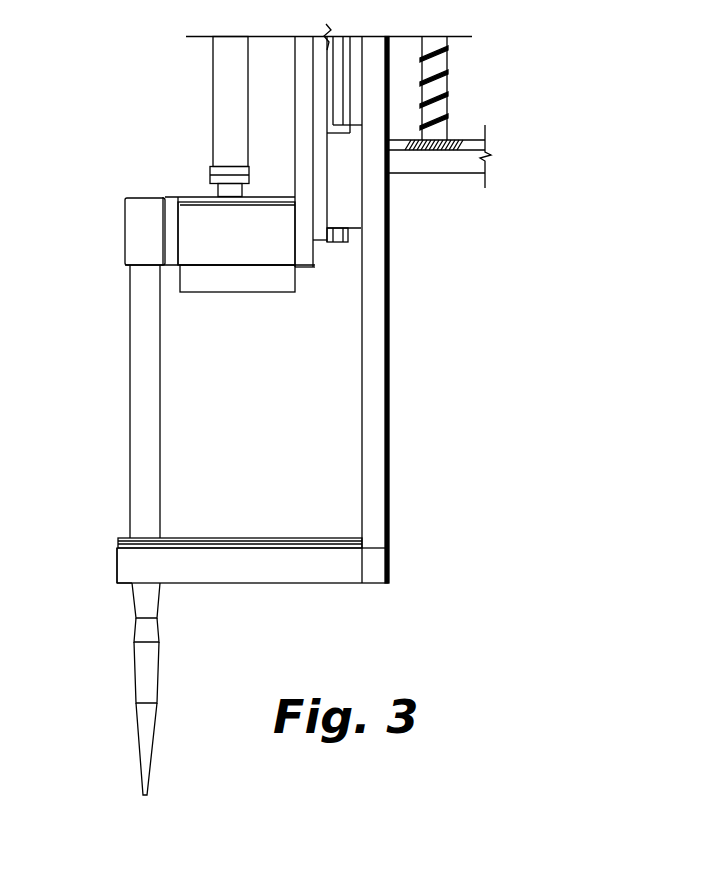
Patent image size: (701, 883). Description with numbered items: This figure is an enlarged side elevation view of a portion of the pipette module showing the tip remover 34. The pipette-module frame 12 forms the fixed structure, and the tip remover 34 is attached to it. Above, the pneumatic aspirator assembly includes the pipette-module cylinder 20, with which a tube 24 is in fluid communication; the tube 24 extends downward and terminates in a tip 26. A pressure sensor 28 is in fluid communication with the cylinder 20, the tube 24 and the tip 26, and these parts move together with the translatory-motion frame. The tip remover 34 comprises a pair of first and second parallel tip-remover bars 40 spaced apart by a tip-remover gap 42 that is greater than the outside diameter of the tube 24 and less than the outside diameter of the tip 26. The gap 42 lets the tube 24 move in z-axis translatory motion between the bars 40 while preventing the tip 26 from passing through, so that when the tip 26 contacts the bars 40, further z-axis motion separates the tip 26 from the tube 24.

The pipette-module frame 12 is at (373, 515).
The pipette-module cylinder 20 is at (213, 65).
The tube 24 is at (130, 390).
The tip 26 is at (135, 687).
The pressure sensor 28 is at (210, 290).
The tip remover 34 is at (117, 562).
The tip-remover bars 40 is at (267, 559).
The tip-remover gap 42 is at (186, 543).